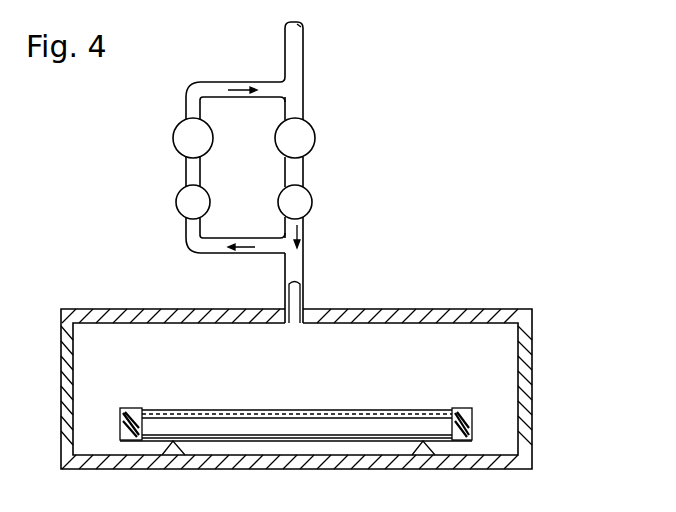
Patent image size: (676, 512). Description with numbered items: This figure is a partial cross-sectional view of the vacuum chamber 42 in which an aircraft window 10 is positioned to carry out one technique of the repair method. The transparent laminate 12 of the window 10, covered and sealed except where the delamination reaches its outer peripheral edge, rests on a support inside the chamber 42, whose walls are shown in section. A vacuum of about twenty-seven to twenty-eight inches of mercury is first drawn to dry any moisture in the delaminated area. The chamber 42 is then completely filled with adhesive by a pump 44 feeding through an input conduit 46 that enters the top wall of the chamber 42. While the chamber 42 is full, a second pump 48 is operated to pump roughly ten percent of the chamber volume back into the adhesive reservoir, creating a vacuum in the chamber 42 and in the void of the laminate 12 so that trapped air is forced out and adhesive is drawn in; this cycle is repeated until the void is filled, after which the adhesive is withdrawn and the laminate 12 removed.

The aircraft window 10 is at (336, 406).
The transparent laminate 12 is at (223, 406).
The vacuum chamber 42 is at (525, 368).
The pump 44 is at (314, 127).
The input conduit 46 is at (296, 268).
The pump 48 is at (176, 132).